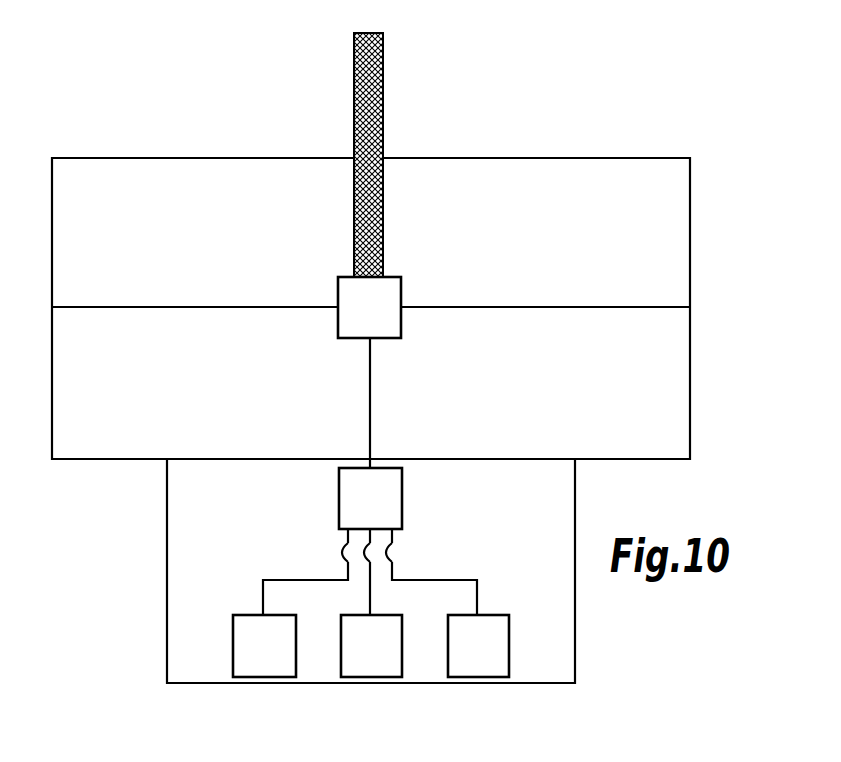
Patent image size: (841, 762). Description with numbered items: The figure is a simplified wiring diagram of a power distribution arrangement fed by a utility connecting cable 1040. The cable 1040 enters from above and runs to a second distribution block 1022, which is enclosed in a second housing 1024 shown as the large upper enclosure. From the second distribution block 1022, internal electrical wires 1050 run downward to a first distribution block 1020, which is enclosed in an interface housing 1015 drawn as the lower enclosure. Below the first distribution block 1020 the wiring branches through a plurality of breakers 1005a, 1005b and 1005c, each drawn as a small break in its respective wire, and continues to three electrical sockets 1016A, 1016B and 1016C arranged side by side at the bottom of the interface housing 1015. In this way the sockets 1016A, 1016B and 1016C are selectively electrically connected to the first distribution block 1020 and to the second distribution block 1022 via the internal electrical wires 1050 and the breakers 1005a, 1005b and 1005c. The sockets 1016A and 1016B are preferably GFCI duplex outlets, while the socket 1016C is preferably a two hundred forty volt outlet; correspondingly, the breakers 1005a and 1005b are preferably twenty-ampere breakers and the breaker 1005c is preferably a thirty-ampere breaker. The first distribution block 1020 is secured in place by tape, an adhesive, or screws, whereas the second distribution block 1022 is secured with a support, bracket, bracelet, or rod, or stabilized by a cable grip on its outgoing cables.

The utility connecting cable 1040 is at (383, 85).
The second distribution block 1022 is at (401, 292).
The internal electrical wires 1050 is at (232, 307).
The second housing 1024 is at (692, 340).
The interface housing 1015 is at (166, 546).
The first distribution block 1020 is at (339, 503).
The breaker 1005a is at (340, 552).
The breaker 1005b is at (363, 563).
The breaker 1005c is at (387, 553).
The electrical socket 1016A is at (257, 673).
The electrical socket 1016B is at (375, 673).
The electrical socket 1016C is at (494, 673).